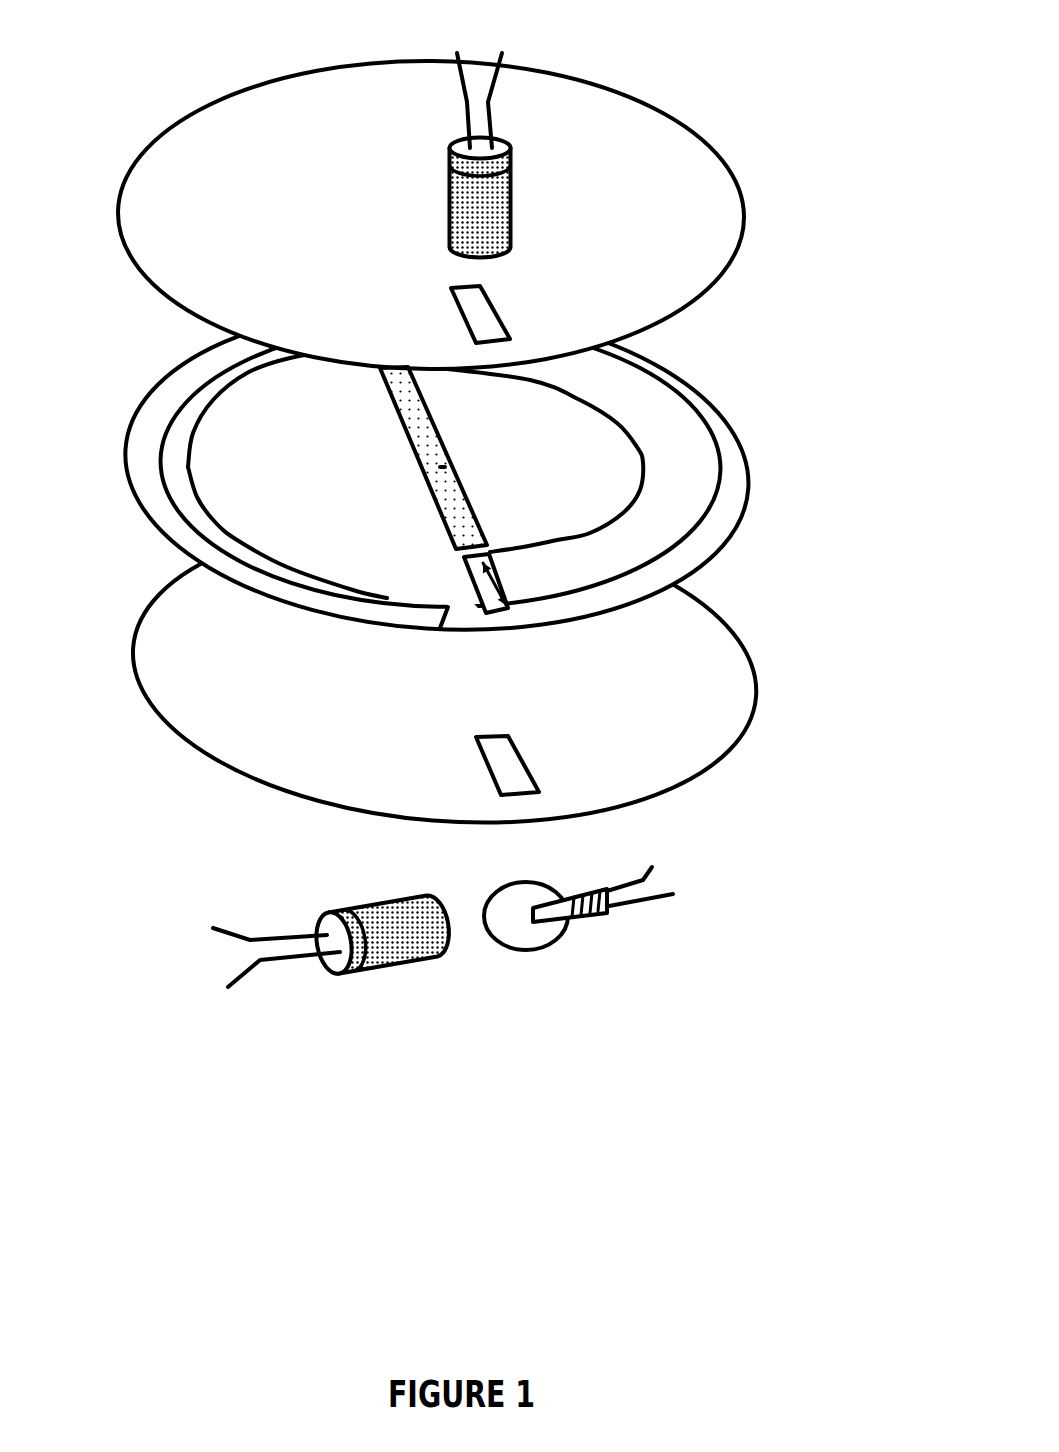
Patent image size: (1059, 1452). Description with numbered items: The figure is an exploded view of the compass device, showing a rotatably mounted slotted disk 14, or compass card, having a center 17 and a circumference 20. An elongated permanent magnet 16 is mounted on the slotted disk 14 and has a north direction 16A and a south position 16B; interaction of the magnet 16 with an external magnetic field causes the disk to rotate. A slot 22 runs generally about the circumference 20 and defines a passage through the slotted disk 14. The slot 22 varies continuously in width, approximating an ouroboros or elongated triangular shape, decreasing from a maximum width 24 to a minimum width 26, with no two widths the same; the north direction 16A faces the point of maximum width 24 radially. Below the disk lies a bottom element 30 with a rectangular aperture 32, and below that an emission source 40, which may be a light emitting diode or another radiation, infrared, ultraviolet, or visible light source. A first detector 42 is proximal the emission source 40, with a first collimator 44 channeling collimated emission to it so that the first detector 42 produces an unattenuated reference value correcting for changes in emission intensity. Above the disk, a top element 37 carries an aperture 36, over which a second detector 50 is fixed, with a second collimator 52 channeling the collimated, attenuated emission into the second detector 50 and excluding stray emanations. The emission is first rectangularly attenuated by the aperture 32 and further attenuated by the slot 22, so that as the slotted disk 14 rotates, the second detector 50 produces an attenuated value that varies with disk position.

The slotted disk 14 is at (466, 501).
The elongated permanent magnet 16 is at (440, 473).
The north direction 16A is at (453, 527).
The south position 16B is at (392, 392).
The center 17 is at (443, 467).
The circumference 20 is at (218, 357).
The slot 22 is at (678, 548).
The maximum width 24 is at (500, 585).
The minimum width 26 is at (452, 610).
The bottom element 30 is at (421, 672).
The aperture 32 is at (518, 775).
The aperture 36 is at (465, 314).
The top element 37 is at (463, 229).
The emission source 40 is at (550, 940).
The first detector 42 is at (335, 975).
The first collimator 44 is at (354, 983).
The second detector 50 is at (511, 140).
The second collimator 52 is at (661, 131).